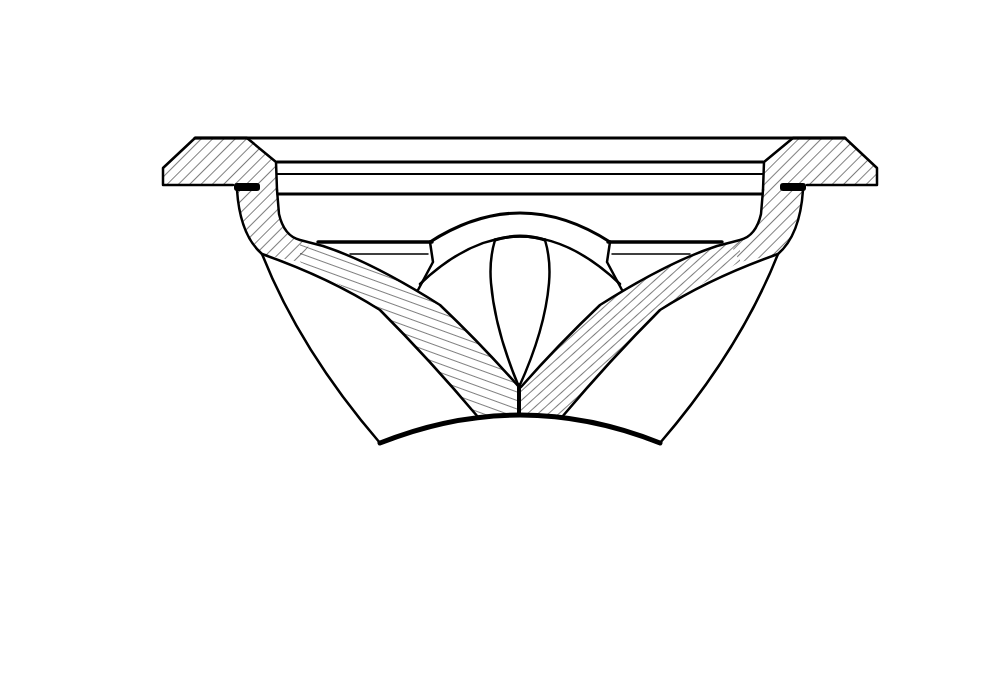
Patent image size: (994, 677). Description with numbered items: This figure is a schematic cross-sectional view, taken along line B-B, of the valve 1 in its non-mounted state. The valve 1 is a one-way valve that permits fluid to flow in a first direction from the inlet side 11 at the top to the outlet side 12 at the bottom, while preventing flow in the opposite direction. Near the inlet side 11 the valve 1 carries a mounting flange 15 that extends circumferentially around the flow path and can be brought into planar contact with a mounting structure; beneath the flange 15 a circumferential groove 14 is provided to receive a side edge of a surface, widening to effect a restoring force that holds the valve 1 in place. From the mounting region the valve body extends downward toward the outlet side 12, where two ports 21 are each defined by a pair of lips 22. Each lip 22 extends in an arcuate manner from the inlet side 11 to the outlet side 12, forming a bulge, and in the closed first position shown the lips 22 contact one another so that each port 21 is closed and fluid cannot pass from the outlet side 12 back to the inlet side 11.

The valve 1 is at (124, 115).
The inlet side 11 is at (535, 97).
The outlet side 12 is at (537, 506).
The groove 14 is at (236, 192).
The flange 15 is at (848, 157).
The port 21 is at (343, 480).
The lip 22 is at (595, 433).